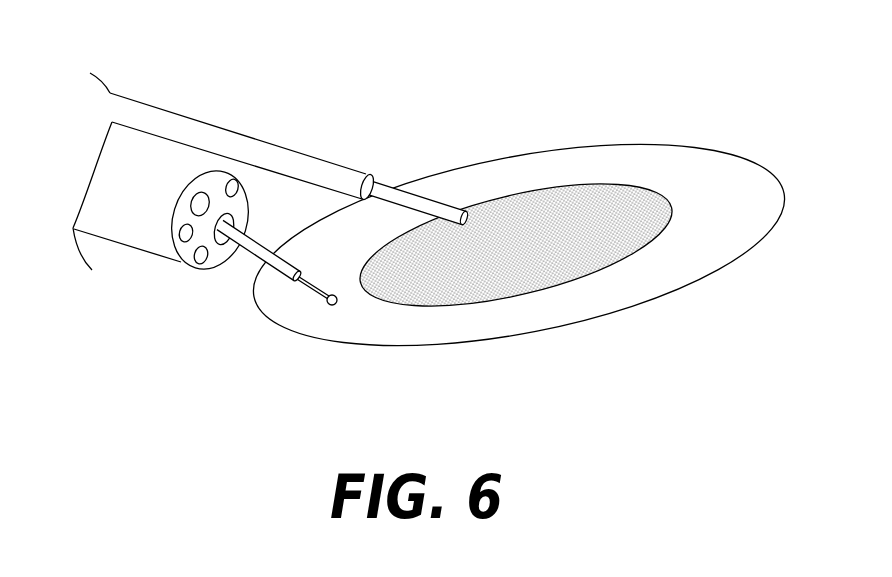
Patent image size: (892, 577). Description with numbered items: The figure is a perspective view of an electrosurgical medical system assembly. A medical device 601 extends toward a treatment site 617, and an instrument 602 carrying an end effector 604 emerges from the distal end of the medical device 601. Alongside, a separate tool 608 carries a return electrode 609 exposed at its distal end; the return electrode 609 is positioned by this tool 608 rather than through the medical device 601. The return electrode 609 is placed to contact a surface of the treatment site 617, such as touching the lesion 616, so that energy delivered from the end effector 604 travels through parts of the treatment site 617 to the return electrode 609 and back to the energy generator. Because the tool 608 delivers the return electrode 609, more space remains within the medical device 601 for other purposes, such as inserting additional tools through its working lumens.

The medical device 601 is at (142, 237).
The instrument 602 is at (242, 262).
The end effector 604 is at (310, 293).
The tool 608 is at (263, 142).
The return electrode 609 is at (413, 193).
The lesion 616 is at (597, 262).
The treatment site 617 is at (542, 168).